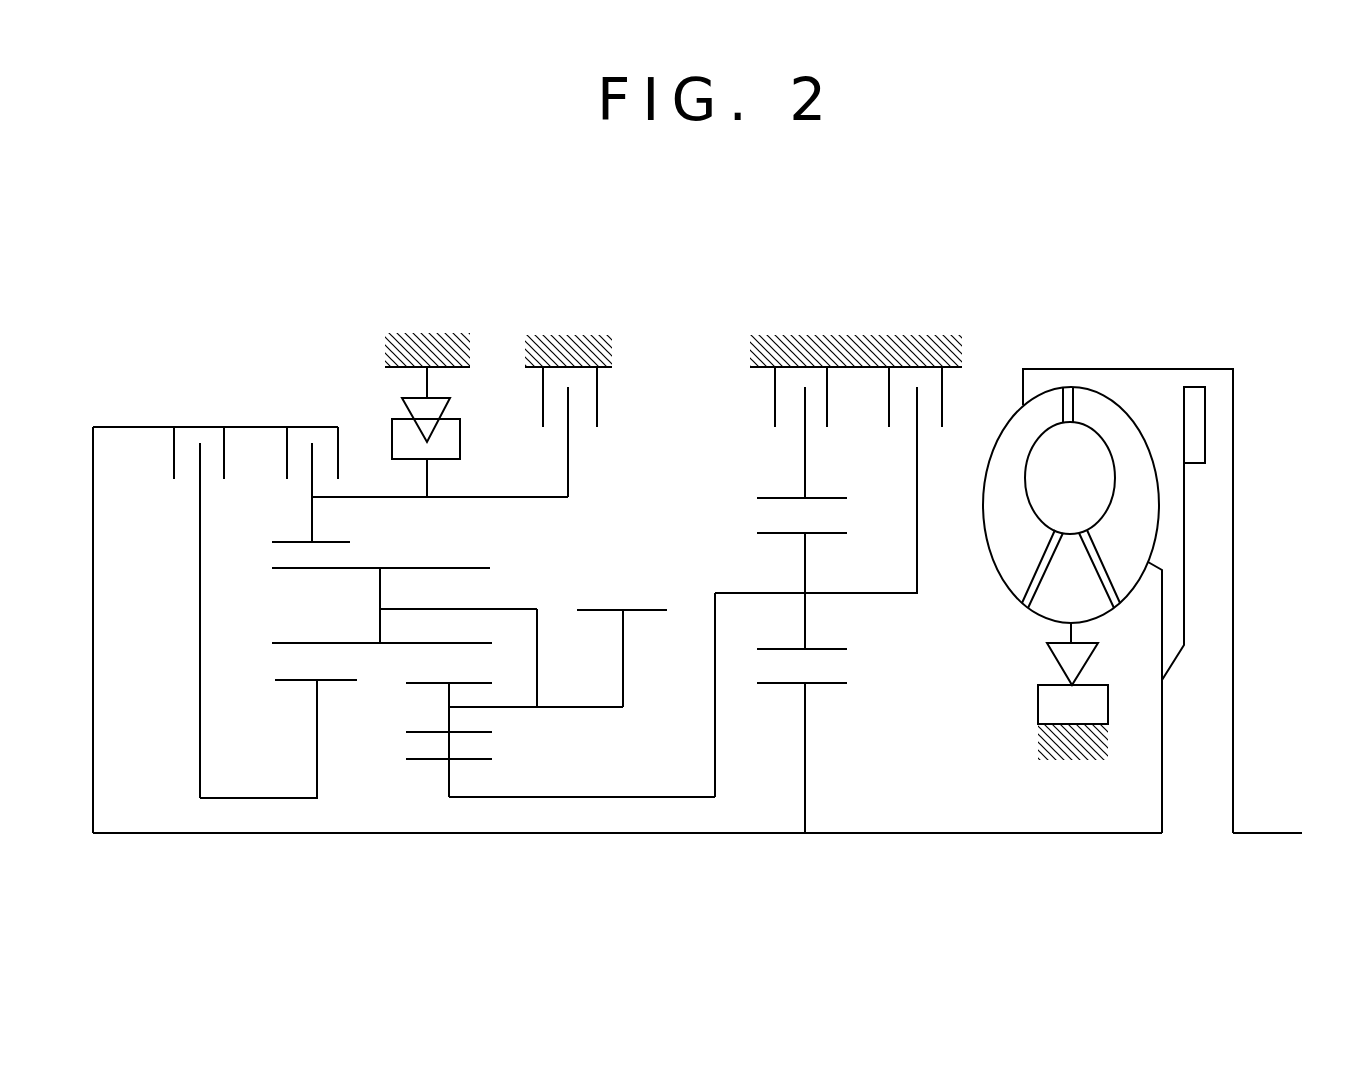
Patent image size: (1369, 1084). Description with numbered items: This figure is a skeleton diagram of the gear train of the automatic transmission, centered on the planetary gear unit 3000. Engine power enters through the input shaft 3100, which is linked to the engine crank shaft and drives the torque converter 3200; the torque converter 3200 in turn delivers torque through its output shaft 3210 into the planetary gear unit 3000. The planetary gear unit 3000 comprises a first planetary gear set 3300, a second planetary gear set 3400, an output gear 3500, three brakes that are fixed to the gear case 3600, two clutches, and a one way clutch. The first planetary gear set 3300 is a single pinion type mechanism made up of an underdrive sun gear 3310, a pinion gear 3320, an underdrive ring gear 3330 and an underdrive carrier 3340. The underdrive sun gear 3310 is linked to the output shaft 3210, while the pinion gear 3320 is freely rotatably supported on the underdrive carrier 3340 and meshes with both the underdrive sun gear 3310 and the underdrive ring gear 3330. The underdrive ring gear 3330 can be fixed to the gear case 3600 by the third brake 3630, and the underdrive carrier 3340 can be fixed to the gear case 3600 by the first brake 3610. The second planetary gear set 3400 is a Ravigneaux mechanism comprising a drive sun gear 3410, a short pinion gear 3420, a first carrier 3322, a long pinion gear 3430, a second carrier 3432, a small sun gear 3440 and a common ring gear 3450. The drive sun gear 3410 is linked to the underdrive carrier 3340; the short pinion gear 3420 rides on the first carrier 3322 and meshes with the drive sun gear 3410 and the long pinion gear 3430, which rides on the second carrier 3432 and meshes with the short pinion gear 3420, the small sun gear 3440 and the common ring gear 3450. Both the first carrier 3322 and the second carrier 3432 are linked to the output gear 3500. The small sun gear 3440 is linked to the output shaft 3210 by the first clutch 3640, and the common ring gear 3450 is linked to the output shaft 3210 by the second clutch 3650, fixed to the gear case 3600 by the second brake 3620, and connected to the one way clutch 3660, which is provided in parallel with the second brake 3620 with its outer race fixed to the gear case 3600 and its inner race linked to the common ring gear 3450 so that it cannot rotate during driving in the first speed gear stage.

The planetary gear unit 3000 is at (684, 274).
The input shaft 3100 is at (1265, 835).
The torque converter 3200 is at (1094, 339).
The output shaft of the torque converter 3210 is at (940, 830).
The first planetary gear set 3300 is at (799, 863).
The sun gear S (UD) 3310 is at (831, 734).
The pinion gear 3320 is at (843, 627).
The carrier C(1) 3322 is at (515, 707).
The ring gear R (UD) 3330 is at (814, 479).
The carrier C (UD) 3340 is at (918, 553).
The second planetary gear set 3400 is at (446, 885).
The sun gear S (D) 3410 is at (513, 766).
The short pinion gear 3420 is at (391, 690).
The long pinion gear 3430 is at (487, 553).
The carrier C (2) 3432 is at (472, 607).
The sun gear S (S) 3440 is at (284, 690).
The ring gear R (1) (R (2)) 3450 is at (347, 513).
The output gear 3500 is at (641, 589).
The gear case 3600 is at (427, 333).
The brake B1 3610 is at (929, 441).
The brake B2 3620 is at (585, 443).
The brake B3 3630 is at (759, 436).
The clutch C1 3640 is at (158, 469).
The clutch C2 3650 is at (268, 469).
The one way clutch F 3660 is at (380, 402).